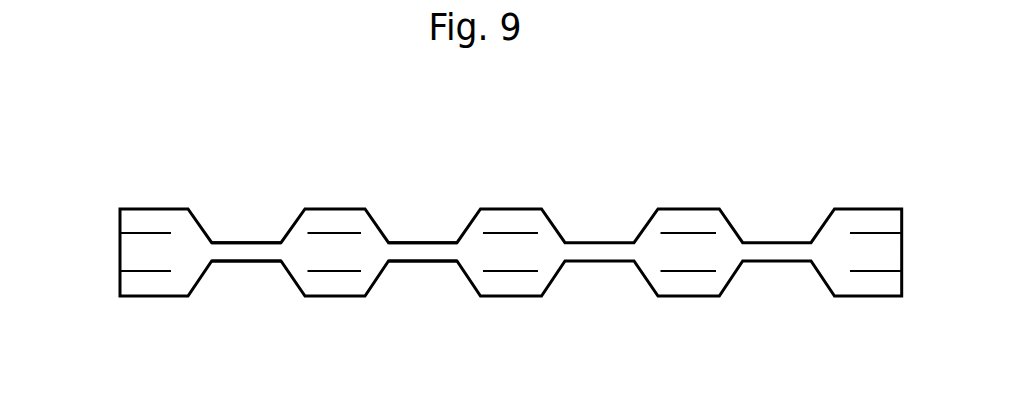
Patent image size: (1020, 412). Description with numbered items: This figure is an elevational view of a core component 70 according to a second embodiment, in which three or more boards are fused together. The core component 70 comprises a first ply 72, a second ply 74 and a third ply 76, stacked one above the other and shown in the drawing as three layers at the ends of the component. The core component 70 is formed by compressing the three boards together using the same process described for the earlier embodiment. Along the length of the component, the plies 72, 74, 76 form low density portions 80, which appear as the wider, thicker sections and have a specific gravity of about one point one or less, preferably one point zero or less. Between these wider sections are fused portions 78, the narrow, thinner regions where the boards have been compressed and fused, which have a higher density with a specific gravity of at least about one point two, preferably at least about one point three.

The core component 70 is at (383, 160).
The first ply 72 is at (129, 222).
The second ply 74 is at (129, 252).
The third ply 76 is at (129, 282).
The fused portions 78 is at (243, 252).
The low density portions 80 is at (168, 188).